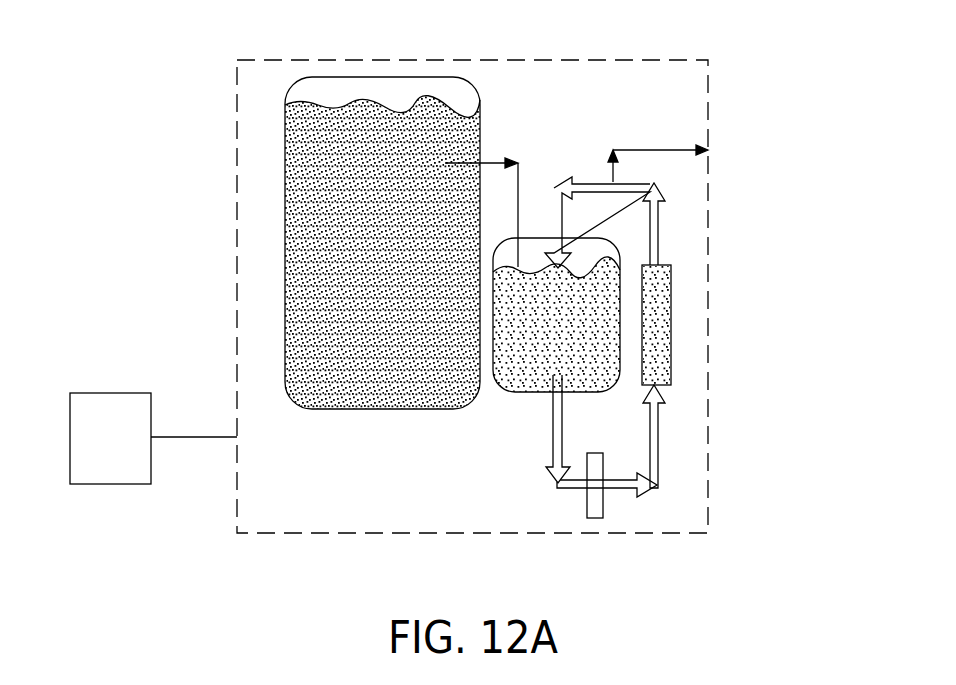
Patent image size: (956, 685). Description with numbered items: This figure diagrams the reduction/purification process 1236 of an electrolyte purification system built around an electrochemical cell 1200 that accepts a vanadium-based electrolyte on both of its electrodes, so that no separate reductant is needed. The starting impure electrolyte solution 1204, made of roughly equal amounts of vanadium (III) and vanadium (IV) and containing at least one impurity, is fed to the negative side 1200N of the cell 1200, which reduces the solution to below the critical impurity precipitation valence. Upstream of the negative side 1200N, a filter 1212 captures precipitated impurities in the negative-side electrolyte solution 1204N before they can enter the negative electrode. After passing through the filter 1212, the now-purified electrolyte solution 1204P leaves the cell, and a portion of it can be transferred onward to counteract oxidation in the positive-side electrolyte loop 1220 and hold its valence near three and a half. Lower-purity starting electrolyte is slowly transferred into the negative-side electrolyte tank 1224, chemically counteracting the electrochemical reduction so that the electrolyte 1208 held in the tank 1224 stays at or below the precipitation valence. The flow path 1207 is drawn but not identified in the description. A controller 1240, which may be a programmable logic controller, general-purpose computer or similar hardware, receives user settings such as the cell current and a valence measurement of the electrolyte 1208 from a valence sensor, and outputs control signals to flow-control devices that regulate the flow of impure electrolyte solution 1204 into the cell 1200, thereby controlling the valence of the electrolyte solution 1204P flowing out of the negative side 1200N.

The impure electrolyte solution 1204 is at (380, 128).
The reduction/purification process 1236 is at (237, 151).
The electrolyte in the tank 1208 is at (515, 375).
The negative-side electrolyte tank 1224 is at (530, 238).
The positive-side electrolyte loop 1220 is at (672, 207).
The purified electrolyte solution 1204P is at (660, 150).
The electrochemical cell 1200 is at (729, 311).
The negative side 1200N is at (670, 338).
The negative-side electrolyte solution 1204N is at (660, 440).
The supply flow path 1207 is at (541, 419).
The filter 1212 is at (603, 500).
The controller 1240 is at (111, 484).